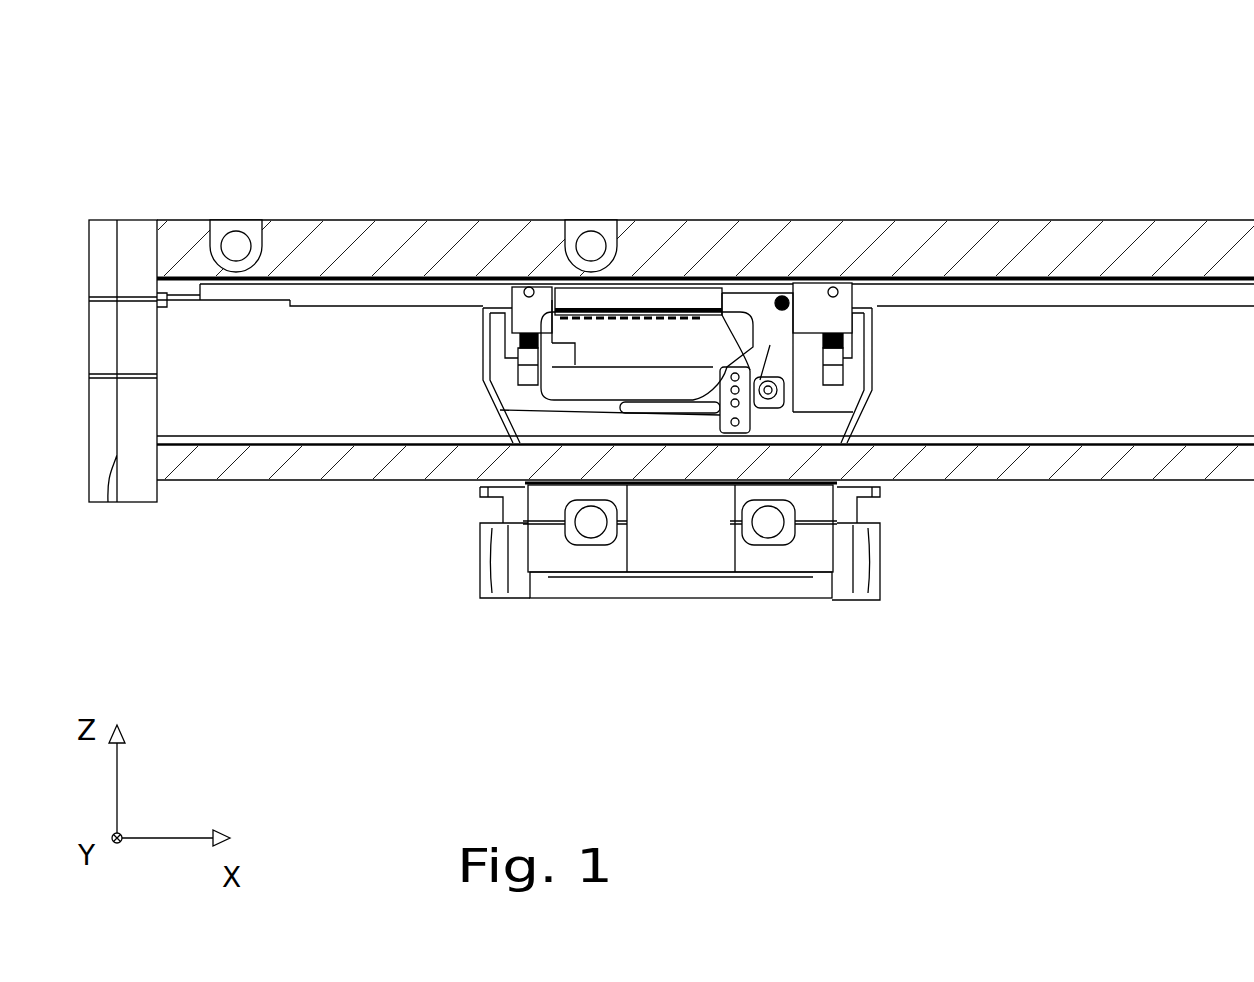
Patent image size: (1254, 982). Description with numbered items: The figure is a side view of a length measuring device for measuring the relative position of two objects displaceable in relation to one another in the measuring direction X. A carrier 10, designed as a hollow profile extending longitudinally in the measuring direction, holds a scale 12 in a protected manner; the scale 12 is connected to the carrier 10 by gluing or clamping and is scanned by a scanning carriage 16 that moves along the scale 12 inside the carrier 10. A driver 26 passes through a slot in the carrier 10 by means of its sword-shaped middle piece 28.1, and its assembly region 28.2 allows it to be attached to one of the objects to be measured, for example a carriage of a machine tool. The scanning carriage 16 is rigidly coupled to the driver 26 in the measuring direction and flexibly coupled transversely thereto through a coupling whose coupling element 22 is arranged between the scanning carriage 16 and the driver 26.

The carrier 10 is at (357, 247).
The scale 12 is at (652, 305).
The scanning carriage 16 is at (512, 287).
The coupling element 22 is at (773, 350).
The driver 26 is at (485, 413).
The sword-shaped middle piece 28.1 is at (537, 423).
The assembly region 28.2 is at (678, 543).